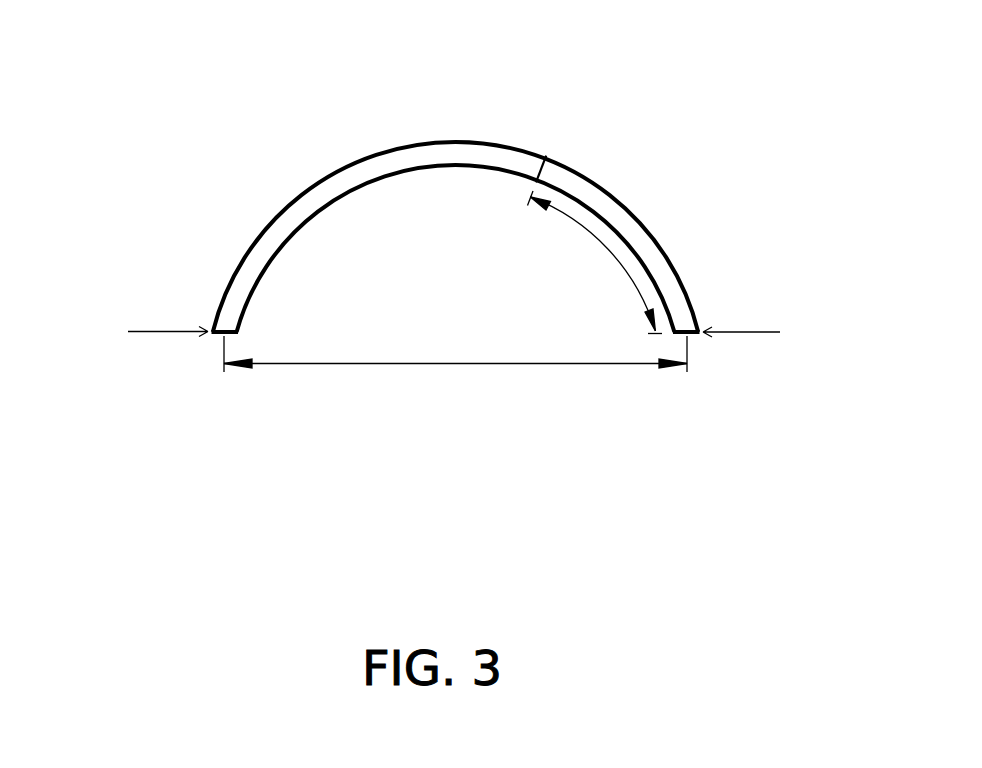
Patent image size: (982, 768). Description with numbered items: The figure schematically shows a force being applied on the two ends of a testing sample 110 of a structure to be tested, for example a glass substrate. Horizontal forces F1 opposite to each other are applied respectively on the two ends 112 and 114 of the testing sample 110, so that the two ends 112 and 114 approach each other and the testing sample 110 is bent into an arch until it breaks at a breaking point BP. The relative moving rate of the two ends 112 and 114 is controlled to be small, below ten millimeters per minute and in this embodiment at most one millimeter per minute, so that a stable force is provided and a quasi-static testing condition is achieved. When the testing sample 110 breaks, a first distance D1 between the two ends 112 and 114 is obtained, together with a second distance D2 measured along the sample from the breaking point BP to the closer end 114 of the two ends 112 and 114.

The testing sample 110 is at (440, 141).
The breaking point BP is at (546, 153).
The end of the testing sample 112 is at (216, 338).
The end of the testing sample 114 is at (698, 338).
The horizontal forces F1 is at (455, 329).
The first distance D1 is at (455, 382).
The second distance D2 is at (595, 262).